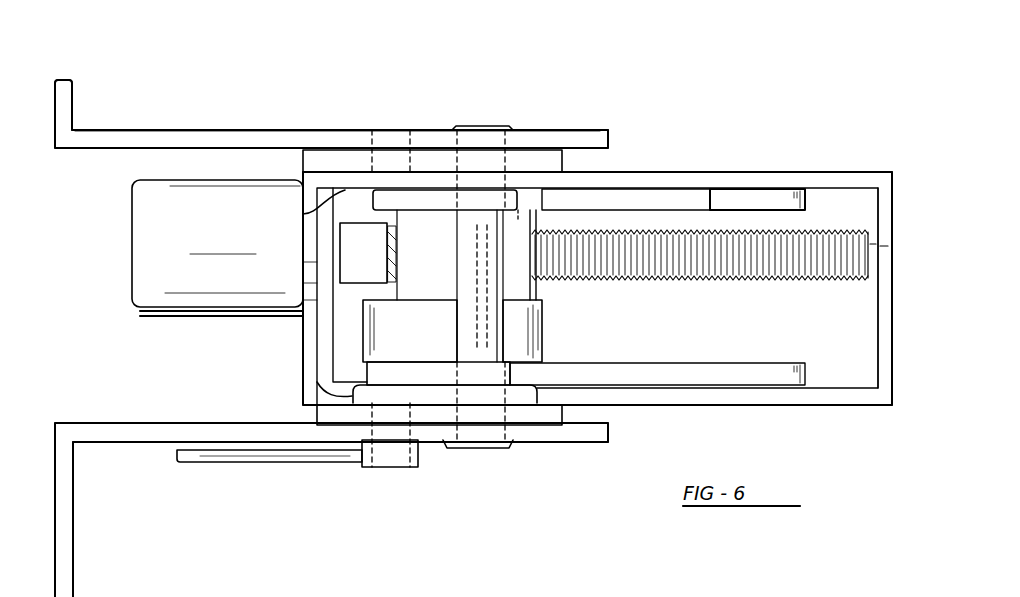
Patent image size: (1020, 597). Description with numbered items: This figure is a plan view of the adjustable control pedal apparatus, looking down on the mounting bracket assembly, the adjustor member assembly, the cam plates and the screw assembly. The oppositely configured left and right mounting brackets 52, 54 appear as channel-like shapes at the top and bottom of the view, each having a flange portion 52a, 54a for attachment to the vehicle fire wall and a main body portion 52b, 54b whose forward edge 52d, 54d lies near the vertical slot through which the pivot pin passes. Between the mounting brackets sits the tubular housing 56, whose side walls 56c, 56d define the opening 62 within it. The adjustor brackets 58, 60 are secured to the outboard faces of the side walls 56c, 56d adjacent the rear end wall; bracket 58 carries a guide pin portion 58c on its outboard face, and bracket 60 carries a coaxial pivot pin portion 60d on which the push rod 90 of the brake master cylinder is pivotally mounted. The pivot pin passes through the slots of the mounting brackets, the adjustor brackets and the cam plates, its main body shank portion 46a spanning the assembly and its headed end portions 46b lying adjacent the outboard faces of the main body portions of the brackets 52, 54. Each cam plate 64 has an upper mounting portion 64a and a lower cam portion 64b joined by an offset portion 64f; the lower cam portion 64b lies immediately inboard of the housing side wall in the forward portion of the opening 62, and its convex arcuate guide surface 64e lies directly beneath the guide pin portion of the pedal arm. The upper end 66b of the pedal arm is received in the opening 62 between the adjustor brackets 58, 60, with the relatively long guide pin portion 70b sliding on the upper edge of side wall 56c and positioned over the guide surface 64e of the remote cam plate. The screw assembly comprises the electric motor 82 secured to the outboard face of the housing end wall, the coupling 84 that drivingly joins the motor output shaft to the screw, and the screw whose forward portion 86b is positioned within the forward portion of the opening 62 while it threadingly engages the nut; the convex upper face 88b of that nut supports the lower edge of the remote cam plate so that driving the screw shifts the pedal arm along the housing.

The main body shank portion 46a is at (473, 330).
The headed end portions 46b is at (490, 128).
The left mounting bracket 52 is at (331, 338).
The flange portion 52a is at (72, 100).
The main body portion 52b is at (236, 130).
The forward edge 52d is at (609, 140).
The right mounting bracket 54 is at (331, 510).
The flange portion 54a is at (75, 500).
The main body portion 54b is at (533, 448).
The forward edge 54d is at (609, 433).
The tubular housing 56 is at (597, 288).
The side wall 56c is at (815, 172).
The side wall 56d is at (725, 408).
The adjustor bracket 58 is at (317, 162).
The guide pin portion 58c is at (371, 146).
The adjustor bracket 60 is at (317, 415).
The pivot pin portion 60d is at (402, 468).
The opening 62 is at (840, 203).
The cam plate 64 is at (350, 285).
The upper mounting portion 64a is at (428, 177).
The lower cam portion 64b is at (712, 200).
The convex arcuate guide surface 64e is at (650, 198).
The offset portion 64f is at (322, 208).
The upper end of pedal arm 66b is at (540, 357).
The relatively long portion of guide pin 70b is at (533, 282).
The electric motor 82 is at (186, 259).
The coupling 84 is at (370, 259).
The forward portion of screw 86b is at (840, 283).
The upper face of nut 88b is at (440, 259).
The push rod 90 is at (290, 462).